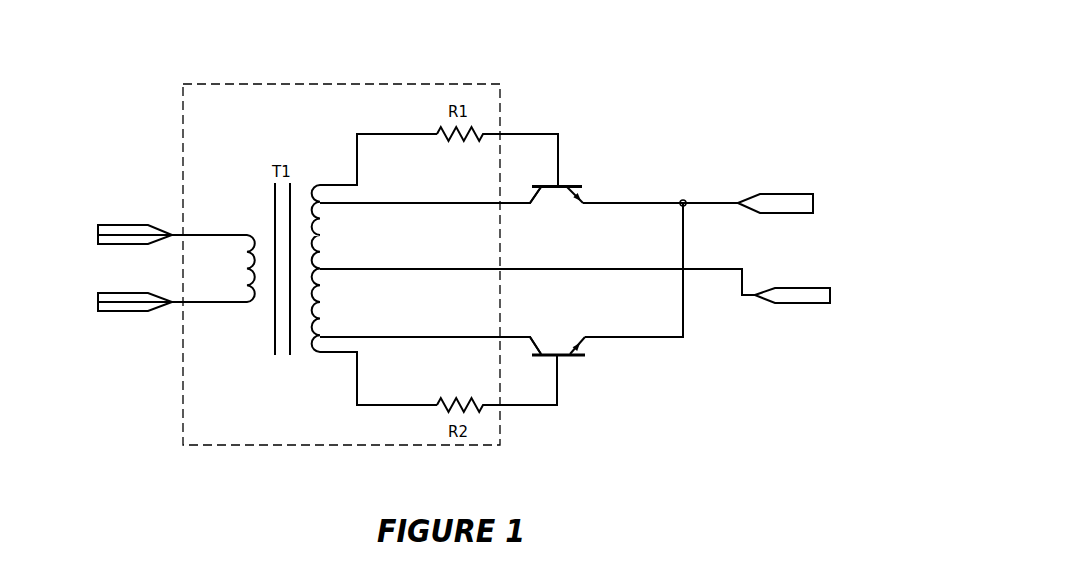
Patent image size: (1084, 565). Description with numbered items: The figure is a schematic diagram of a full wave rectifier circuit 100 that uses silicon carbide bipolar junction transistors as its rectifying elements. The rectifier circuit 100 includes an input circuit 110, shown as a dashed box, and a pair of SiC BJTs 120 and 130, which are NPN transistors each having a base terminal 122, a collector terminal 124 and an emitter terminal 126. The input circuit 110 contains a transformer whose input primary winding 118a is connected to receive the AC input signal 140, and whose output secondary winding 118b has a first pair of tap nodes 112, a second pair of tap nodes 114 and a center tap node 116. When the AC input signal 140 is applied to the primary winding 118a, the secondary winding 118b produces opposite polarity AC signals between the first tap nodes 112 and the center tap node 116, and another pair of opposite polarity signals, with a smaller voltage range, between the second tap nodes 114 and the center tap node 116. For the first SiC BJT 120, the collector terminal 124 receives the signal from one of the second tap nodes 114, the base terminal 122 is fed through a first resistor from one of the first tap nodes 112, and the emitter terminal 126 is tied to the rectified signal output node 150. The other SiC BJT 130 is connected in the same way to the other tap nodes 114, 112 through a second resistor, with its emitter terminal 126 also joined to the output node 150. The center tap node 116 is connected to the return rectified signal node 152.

The full wave rectifier circuit 100 is at (525, 42).
The input circuit 110 is at (368, 85).
The first pair of tap nodes 112 is at (337, 183).
The second pair of tap nodes 114 is at (340, 204).
The center tap node 116 is at (335, 268).
The input primary winding 118a is at (250, 303).
The output secondary winding 118b is at (308, 320).
The SiC BJT 120 is at (591, 179).
The base terminal 122 is at (562, 178).
The collector terminal 124 is at (523, 204).
The emitter terminal 126 is at (583, 205).
The SiC BJT 130 is at (588, 364).
The AC input signal 140 is at (108, 268).
The rectified signal output node 150 is at (710, 203).
The return rectified signal node 152 is at (708, 272).